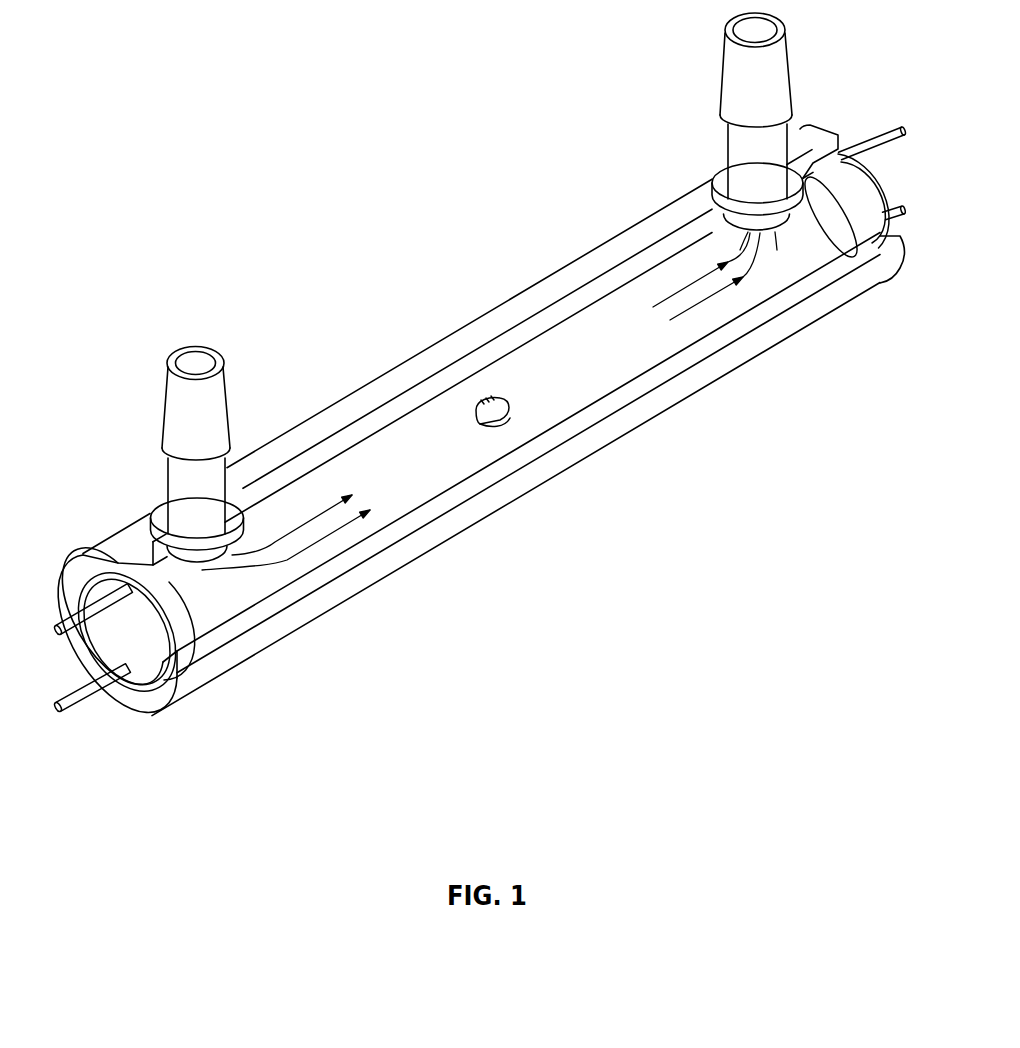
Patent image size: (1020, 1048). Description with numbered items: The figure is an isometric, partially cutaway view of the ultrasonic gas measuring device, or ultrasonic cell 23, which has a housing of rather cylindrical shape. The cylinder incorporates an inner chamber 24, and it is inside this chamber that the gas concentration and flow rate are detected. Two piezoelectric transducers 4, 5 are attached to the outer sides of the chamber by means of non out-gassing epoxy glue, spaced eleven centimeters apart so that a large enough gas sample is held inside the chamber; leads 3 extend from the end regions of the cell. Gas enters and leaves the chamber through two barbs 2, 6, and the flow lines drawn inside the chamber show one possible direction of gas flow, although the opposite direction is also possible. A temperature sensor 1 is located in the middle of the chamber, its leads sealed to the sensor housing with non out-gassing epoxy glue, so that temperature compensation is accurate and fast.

The temperature sensor 1 is at (505, 430).
The barb 2 is at (155, 480).
The electrode rods 3 is at (81, 712).
The piezoelectric transducer 4 is at (142, 663).
The piezoelectric transducer 5 is at (867, 232).
The barb 6 is at (712, 60).
The ultrasonic cell 23 is at (428, 268).
The inner chamber 24 is at (582, 375).